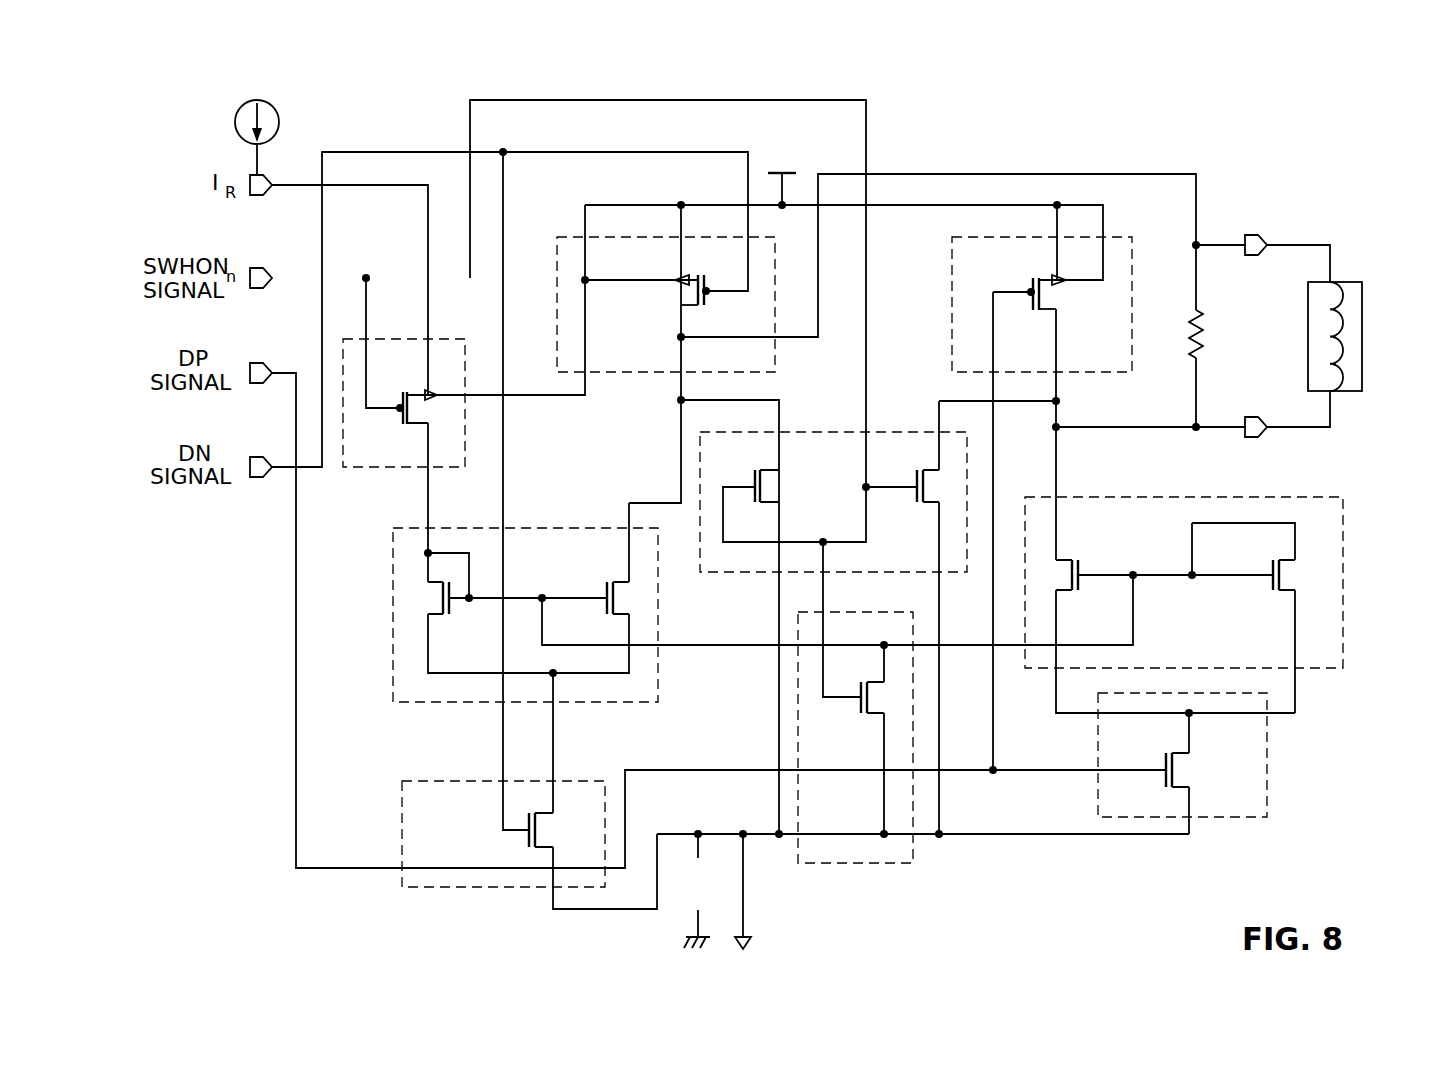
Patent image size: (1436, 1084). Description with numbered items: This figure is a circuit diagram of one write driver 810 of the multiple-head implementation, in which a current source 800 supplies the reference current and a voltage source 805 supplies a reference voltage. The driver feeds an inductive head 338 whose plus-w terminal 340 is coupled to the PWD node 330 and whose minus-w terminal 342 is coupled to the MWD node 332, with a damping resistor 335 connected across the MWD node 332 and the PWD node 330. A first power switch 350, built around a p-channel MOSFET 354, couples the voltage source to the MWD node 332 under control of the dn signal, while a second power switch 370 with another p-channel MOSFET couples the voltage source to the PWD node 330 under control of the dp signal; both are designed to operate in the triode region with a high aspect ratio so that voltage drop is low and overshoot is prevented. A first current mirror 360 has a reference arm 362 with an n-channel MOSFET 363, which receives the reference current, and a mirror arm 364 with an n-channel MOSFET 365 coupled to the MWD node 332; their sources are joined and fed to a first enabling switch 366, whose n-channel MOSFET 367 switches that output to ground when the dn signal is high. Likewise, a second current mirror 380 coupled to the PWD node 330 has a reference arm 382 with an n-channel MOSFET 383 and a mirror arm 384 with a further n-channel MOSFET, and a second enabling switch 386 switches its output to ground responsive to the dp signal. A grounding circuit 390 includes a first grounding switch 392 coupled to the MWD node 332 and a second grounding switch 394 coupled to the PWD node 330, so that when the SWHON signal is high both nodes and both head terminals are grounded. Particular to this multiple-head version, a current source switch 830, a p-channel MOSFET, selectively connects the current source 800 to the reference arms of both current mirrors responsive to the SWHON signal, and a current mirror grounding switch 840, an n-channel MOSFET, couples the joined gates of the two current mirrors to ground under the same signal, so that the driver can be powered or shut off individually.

The current source 800 is at (235, 124).
The voltage source 805 is at (774, 172).
The write driver 810 is at (1072, 140).
The current source switch 830 is at (347, 468).
The first power switch 350 is at (648, 275).
The transistor TP1 354 is at (663, 296).
The second power switch 370 is at (952, 268).
The grounding circuit 390 is at (833, 467).
The first grounding switch 392 is at (782, 483).
The second grounding switch 394 is at (913, 462).
The first current mirror 360 is at (525, 580).
The first, reference arm 362 is at (425, 655).
The transistor TN3 363 is at (425, 599).
The second, mirror arm 364 is at (629, 553).
The transistor TN1 365 is at (642, 598).
The first enabling switch 366 is at (460, 834).
The transistor TN5 367 is at (507, 847).
The current mirror grounding switch 840 is at (865, 865).
The second current mirror 380 is at (1230, 605).
The first, reference arm 382 is at (1295, 644).
The transistor TN4 383 is at (1300, 576).
The second, mirror arm 384 is at (1058, 522).
The second enabling switch 386 is at (1267, 774).
The MWD node 332 is at (1225, 243).
The PWD node 330 is at (1220, 430).
The damping resistor 335 is at (1207, 325).
The inductive head 338 is at (1306, 357).
The second (−w) terminal 342 is at (1332, 282).
The first (+w) terminal 340 is at (1335, 393).